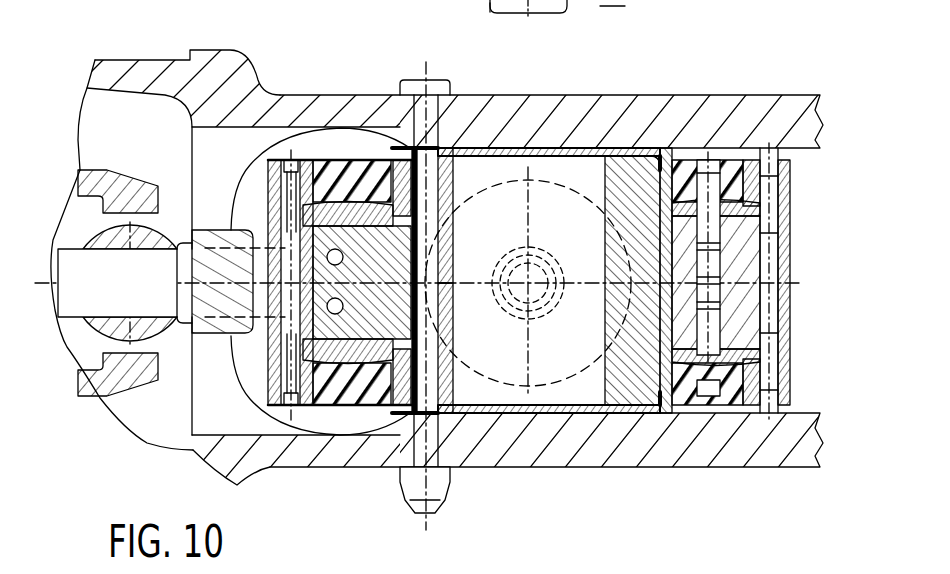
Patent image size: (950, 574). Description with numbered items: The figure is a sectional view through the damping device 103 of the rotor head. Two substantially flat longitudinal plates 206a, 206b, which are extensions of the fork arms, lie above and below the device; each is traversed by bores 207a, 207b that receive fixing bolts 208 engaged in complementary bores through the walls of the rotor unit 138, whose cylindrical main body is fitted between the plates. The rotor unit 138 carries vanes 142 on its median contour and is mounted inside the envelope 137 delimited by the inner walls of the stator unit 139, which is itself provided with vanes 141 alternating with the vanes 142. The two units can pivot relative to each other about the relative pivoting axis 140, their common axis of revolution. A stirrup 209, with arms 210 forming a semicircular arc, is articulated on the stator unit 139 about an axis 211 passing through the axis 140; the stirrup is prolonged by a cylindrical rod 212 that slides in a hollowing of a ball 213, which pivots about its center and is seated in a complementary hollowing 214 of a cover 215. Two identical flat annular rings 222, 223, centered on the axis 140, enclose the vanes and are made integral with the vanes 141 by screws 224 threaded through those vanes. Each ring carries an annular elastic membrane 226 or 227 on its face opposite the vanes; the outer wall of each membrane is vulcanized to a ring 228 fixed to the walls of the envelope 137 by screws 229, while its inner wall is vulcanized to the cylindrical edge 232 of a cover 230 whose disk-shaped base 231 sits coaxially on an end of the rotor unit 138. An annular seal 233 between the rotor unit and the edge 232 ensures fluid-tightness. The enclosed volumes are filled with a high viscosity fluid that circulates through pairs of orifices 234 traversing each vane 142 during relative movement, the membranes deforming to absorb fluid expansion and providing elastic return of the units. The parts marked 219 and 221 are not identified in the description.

The damping device 103 is at (752, 44).
The envelope 137 is at (240, 362).
The rotor unit 138 is at (357, 438).
The stator unit 139 is at (263, 140).
The relative pivoting axis 140 is at (541, 147).
The vanes of the stator unit 141 is at (740, 268).
The vanes of the rotor unit 142 is at (352, 355).
The longitudinal plate 206a is at (590, 120).
The longitudinal plate 206b is at (610, 443).
The bores 207a is at (453, 128).
The bores 207b is at (447, 416).
The fixing bolts 208 is at (391, 130).
The stirrup 209 is at (188, 340).
The arms 210 is at (578, 420).
The axis 211 is at (538, 252).
The cylindrical rod 212 is at (82, 300).
The ball 213 is at (87, 243).
The complementary hollowing 214 is at (100, 370).
The cover 215 is at (98, 170).
The link 219 is at (560, 13).
The pin 221 is at (489, 5).
The flat annular ring 222 is at (328, 157).
The flat annular ring 223 is at (306, 365).
The screws 224 is at (714, 247).
The annular elastic membrane 226 is at (363, 168).
The annular elastic membrane 227 is at (336, 316).
The ring 228 is at (786, 160).
The screws 229 is at (190, 450).
The cover 230 is at (628, 146).
The base 231 is at (507, 148).
The cylindrical edge 232 is at (677, 160).
The annular seal 233 is at (408, 186).
The orifices 234 is at (228, 240).